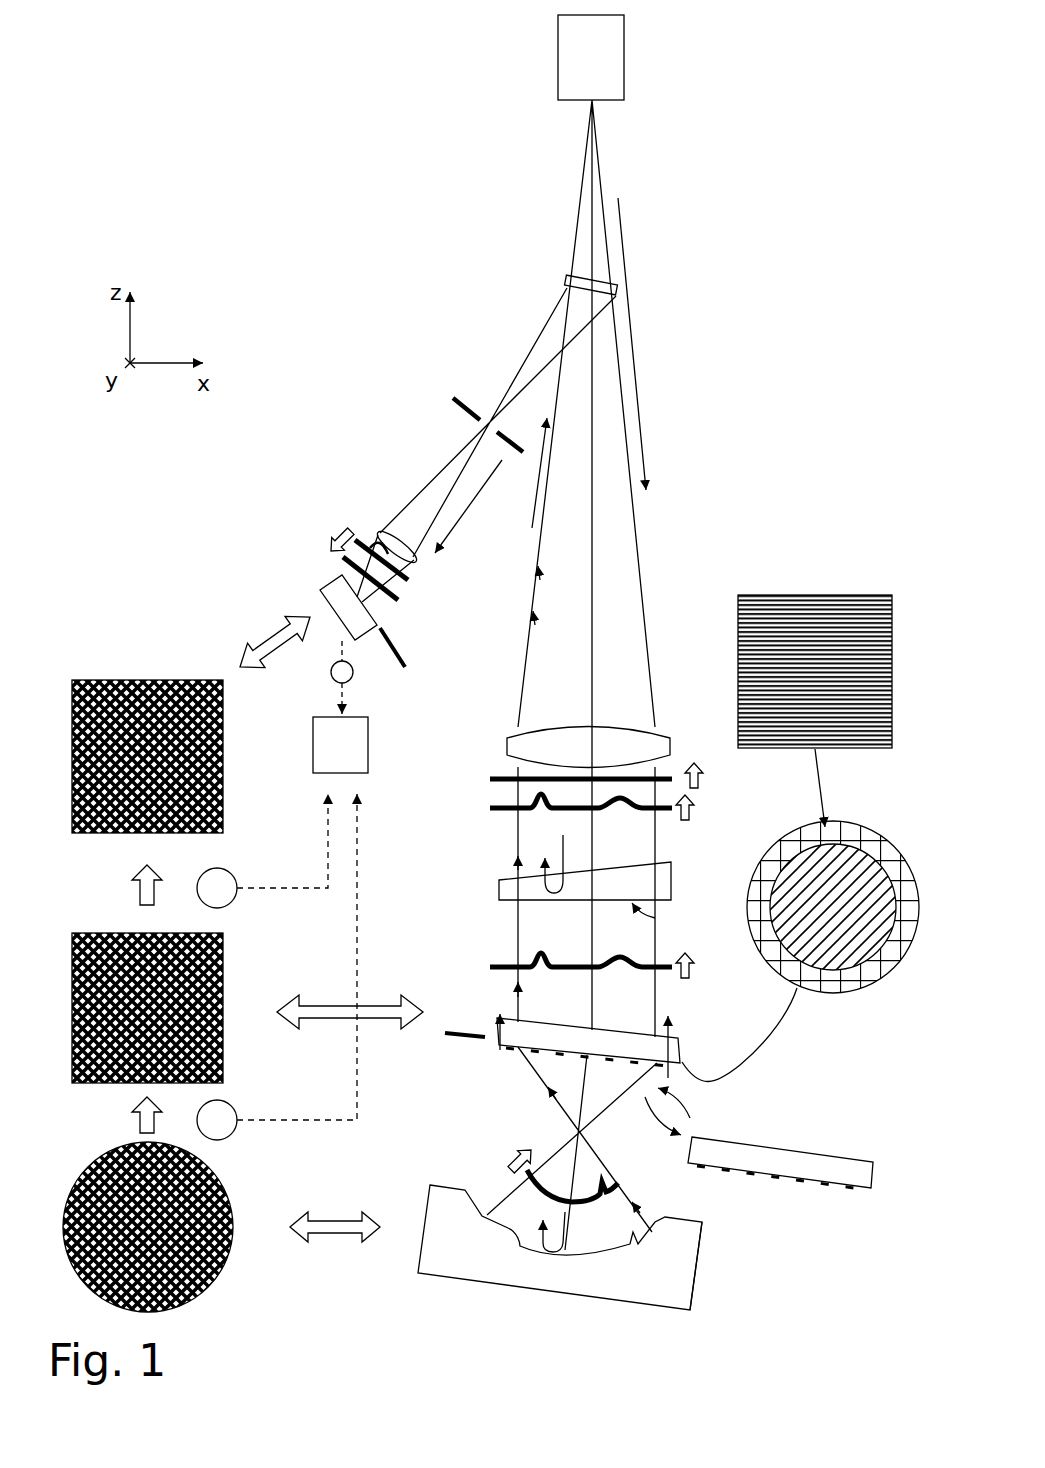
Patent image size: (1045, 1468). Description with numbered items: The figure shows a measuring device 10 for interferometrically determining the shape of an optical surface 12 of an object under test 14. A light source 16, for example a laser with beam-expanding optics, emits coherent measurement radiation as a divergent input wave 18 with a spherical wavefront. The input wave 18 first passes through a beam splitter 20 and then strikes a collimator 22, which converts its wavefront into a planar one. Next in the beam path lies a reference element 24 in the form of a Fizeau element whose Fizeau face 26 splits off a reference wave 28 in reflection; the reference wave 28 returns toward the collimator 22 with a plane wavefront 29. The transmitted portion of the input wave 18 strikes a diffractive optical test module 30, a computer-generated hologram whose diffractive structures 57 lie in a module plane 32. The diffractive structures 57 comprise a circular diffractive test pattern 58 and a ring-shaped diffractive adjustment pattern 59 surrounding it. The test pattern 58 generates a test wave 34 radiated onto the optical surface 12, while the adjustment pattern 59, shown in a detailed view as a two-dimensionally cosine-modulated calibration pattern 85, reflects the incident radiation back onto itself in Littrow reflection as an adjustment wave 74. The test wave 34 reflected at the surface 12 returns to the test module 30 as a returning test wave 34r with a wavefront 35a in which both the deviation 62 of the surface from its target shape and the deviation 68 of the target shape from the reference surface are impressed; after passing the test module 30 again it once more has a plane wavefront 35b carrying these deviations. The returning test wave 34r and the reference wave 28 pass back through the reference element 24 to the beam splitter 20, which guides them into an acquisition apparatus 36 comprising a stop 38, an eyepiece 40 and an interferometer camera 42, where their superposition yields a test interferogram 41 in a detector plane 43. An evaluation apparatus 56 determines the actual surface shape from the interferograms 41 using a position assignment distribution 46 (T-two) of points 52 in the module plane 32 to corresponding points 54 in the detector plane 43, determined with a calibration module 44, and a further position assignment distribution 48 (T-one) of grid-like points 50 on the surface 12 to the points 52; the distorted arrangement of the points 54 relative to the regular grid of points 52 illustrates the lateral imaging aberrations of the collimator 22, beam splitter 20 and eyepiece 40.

The measuring device 10 is at (318, 293).
The optical surface 12 is at (472, 1197).
The object under test 14 is at (700, 1256).
The light source 16 is at (624, 59).
The input wave 18 is at (602, 178).
The beam splitter 20 is at (563, 278).
The collimator 22 is at (505, 746).
The reference element 24 is at (499, 890).
The Fizeau face 26 is at (660, 916).
The reference wave 28 is at (531, 568).
The plane wavefront 29 is at (490, 779).
The diffractive optical test module 30 is at (683, 1053).
The module plane 32 is at (449, 1040).
The test wave 34 is at (548, 1092).
The returning test wave 34r is at (526, 619).
The wavefront 35a is at (620, 1182).
The reference surface profile 35b is at (490, 808).
The acquisition apparatus 36 is at (305, 541).
The stop 38 is at (452, 400).
The eyepiece 40 is at (386, 535).
The test interferogram 41 is at (331, 672).
The interferometer camera 42 is at (318, 590).
The detector plane 43 is at (412, 666).
The calibration module 44 is at (876, 1180).
The position assignment distribution T2 46 is at (236, 900).
The position assignment distribution T1 48 is at (236, 1133).
The points on the surface 50 is at (238, 1251).
The points in the module plane 52 is at (230, 1052).
The points in the detector plane 54 is at (230, 787).
The evaluation apparatus 56 is at (370, 745).
The diffractive structures 57 is at (887, 829).
The diffractive test pattern 58 is at (813, 862).
The diffractive adjustment pattern 59 is at (853, 986).
The deviation of the optical surface from the target shape 62 is at (529, 955).
The deviation of the target shape from the reference surface 68 is at (649, 958).
The adjustment wave 74 is at (496, 1010).
The calibration pattern 85 is at (794, 594).